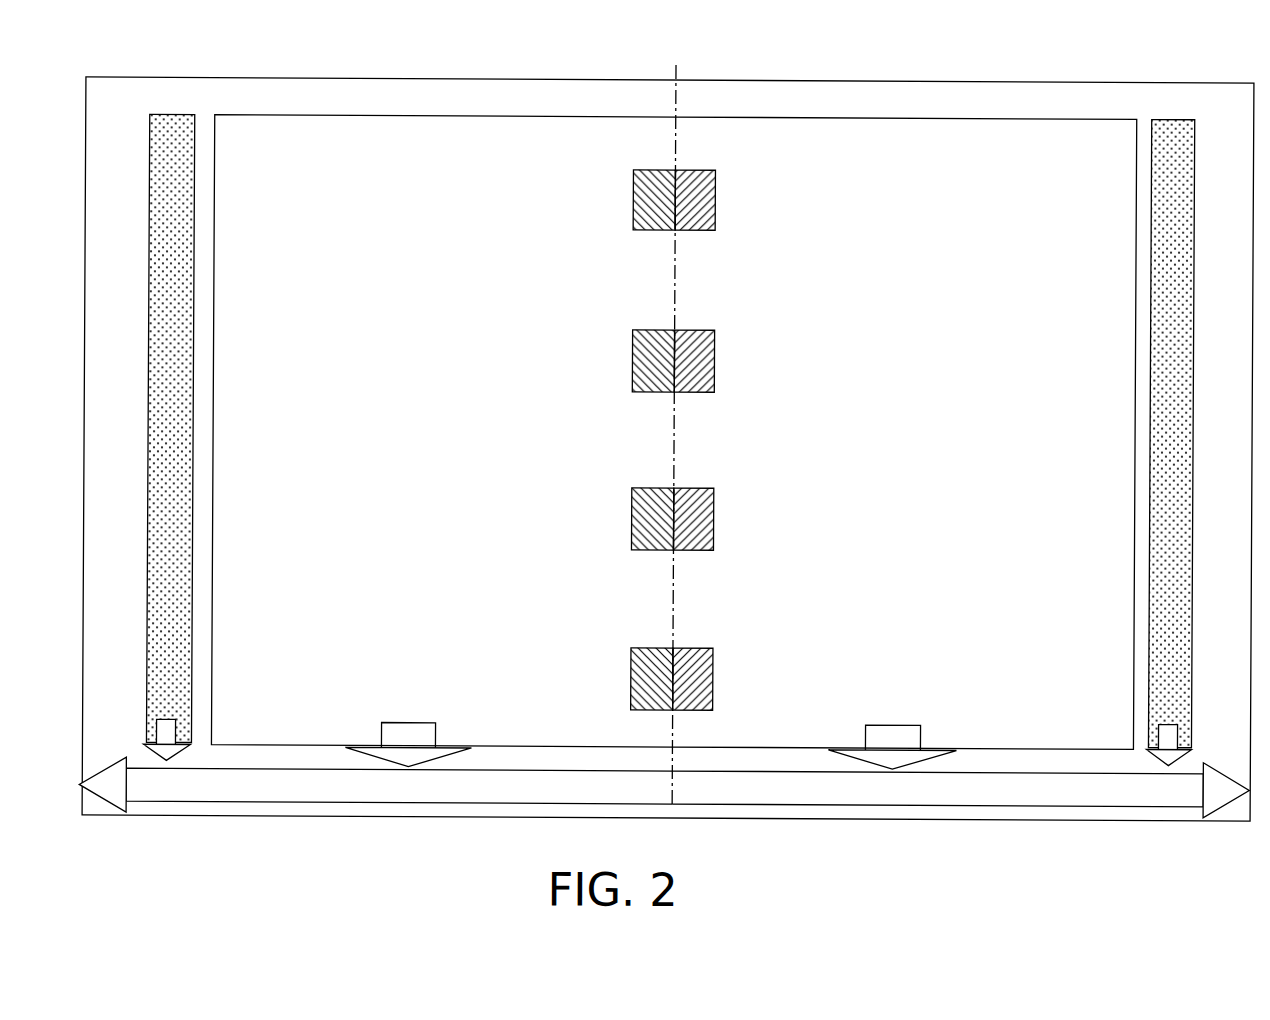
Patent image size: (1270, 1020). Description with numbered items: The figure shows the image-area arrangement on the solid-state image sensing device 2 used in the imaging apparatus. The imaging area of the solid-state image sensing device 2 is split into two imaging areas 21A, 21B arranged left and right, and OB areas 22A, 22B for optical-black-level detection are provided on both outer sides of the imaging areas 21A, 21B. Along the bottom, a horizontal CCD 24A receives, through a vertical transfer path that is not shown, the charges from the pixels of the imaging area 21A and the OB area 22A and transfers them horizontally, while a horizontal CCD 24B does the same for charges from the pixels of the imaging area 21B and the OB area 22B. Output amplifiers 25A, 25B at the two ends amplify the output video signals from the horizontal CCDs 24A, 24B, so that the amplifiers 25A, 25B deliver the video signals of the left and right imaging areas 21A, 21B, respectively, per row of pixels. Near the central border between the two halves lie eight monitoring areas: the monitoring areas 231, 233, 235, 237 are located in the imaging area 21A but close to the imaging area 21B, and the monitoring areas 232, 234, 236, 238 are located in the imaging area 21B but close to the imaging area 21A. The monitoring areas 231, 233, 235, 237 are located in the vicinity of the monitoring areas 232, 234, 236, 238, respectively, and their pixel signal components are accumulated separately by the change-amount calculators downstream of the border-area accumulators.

The solid-state image sensing device 2 is at (790, 58).
The imaging area 21A is at (428, 128).
The imaging area 21B is at (944, 130).
The OB area 22A is at (174, 125).
The OB area 22B is at (1173, 130).
The monitoring area 231 is at (633, 197).
The monitoring area 232 is at (714, 197).
The monitoring area 233 is at (633, 358).
The monitoring area 234 is at (714, 358).
The monitoring area 235 is at (633, 516).
The monitoring area 236 is at (714, 516).
The monitoring area 237 is at (633, 676).
The monitoring area 238 is at (714, 676).
The horizontal CCD 24A is at (411, 806).
The horizontal CCD 24B is at (826, 806).
The output amplifier 25A is at (112, 790).
The output amplifier 25B is at (1216, 806).